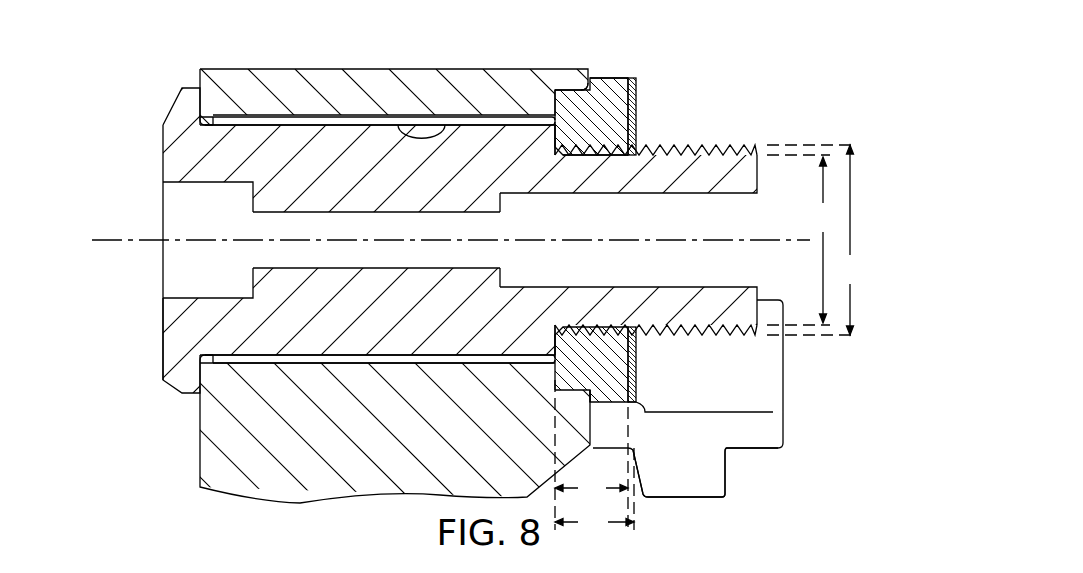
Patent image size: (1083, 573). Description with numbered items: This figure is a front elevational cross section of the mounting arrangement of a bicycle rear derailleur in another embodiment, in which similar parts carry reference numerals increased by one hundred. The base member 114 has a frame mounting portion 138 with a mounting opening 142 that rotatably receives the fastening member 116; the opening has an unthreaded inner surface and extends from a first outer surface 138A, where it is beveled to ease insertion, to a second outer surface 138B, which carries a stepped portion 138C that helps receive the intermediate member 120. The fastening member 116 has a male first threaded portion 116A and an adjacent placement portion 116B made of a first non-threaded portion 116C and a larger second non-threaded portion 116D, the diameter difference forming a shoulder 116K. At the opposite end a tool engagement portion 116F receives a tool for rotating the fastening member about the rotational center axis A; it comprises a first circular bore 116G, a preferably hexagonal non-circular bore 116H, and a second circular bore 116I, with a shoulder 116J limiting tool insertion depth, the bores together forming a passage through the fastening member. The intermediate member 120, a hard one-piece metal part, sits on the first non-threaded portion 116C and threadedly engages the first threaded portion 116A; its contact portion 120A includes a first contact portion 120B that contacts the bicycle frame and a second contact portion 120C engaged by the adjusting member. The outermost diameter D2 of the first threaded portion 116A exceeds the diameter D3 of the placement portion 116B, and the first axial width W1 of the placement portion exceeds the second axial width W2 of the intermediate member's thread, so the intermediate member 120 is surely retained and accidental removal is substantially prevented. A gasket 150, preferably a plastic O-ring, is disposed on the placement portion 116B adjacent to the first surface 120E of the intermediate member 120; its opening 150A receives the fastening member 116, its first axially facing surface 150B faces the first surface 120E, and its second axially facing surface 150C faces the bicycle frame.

The base member 114 is at (497, 62).
The fastening member 116 is at (163, 155).
The first threaded portion 116A is at (731, 146).
The placement portion 116B is at (565, 349).
The first non-threaded portion 116C is at (636, 350).
The second non-threaded portion 116D is at (313, 123).
The tool engagement portion 116F is at (157, 203).
The first circular bore 116G is at (186, 270).
The non-circular bore 116H is at (336, 280).
The second circular bore 116I is at (713, 262).
The shoulder 116J is at (508, 300).
The shoulder 116K is at (588, 157).
The intermediate member 120 is at (712, 293).
The contact portion 120A is at (756, 458).
The first contact portion 120B is at (785, 390).
The second contact portion 120C is at (688, 500).
The first surface 120E is at (631, 71).
The frame mounting portion 138 is at (271, 68).
The first outer surface 138A is at (200, 445).
The second outer surface 138B is at (588, 84).
The stepped portion 138C is at (636, 383).
The mounting opening 142 is at (403, 134).
The gasket 150 is at (644, 84).
The opening 150A is at (622, 327).
The first axially facing surface 150B is at (608, 87).
The second axially facing surface 150C is at (638, 363).
The rotational center axis A is at (107, 243).
The outermost diameter D2 is at (815, 240).
The diameter of the placement portion D3 is at (801, 240).
The first axial width W1 is at (594, 490).
The second axial width W2 is at (591, 455).